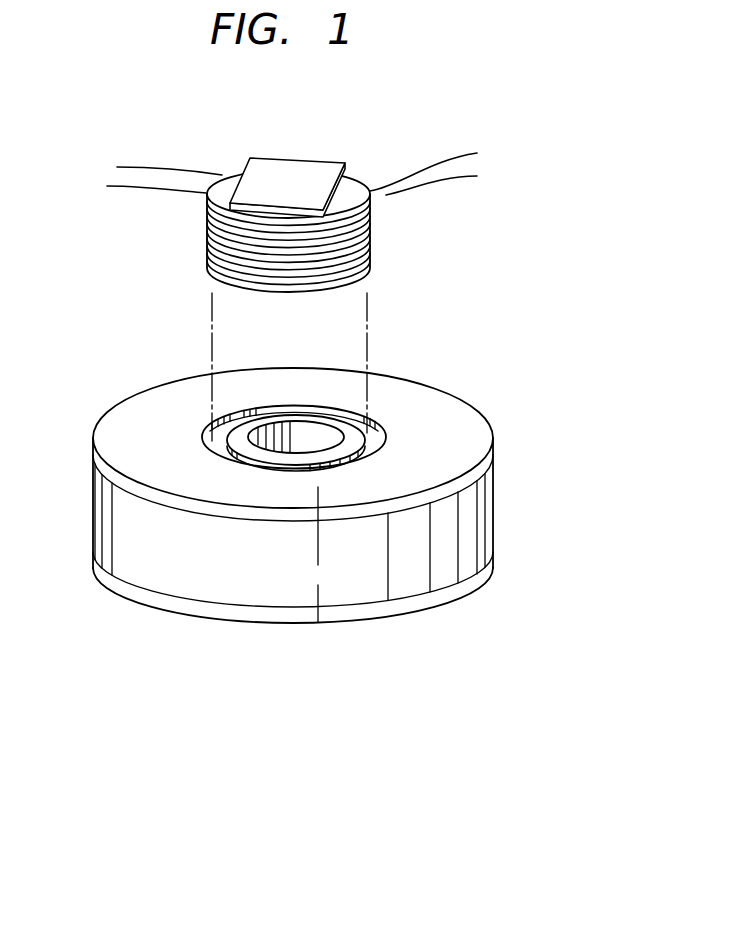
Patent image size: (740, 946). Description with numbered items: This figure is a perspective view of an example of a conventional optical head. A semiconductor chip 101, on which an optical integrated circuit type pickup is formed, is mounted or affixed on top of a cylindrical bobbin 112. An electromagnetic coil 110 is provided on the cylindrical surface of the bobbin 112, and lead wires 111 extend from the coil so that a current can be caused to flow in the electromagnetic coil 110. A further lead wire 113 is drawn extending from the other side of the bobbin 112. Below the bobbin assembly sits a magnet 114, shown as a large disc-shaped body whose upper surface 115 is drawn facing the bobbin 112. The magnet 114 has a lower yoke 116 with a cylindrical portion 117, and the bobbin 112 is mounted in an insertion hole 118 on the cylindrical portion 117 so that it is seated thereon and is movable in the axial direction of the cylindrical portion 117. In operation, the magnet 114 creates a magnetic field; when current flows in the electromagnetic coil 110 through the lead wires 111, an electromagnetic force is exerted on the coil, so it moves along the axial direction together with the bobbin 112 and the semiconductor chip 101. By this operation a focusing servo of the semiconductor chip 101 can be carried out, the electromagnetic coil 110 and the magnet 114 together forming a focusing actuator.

The semiconductor chip 101 is at (280, 168).
The electromagnetic coil 110 is at (373, 237).
The lead wires 111 is at (442, 157).
The cylindrical bobbin 112 is at (353, 180).
The lead wire 113 is at (130, 193).
The magnet 114 is at (480, 508).
The top surface of housing 115 is at (495, 455).
The lower yoke 116 is at (447, 590).
The cylindrical portion 117 is at (242, 437).
The insertion hole 118 is at (365, 430).